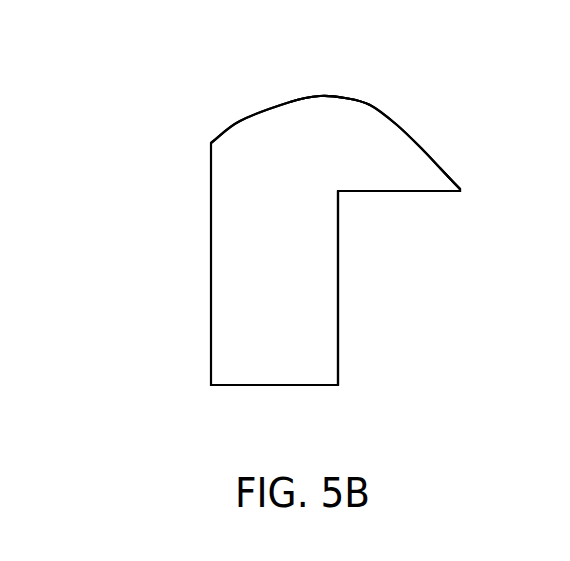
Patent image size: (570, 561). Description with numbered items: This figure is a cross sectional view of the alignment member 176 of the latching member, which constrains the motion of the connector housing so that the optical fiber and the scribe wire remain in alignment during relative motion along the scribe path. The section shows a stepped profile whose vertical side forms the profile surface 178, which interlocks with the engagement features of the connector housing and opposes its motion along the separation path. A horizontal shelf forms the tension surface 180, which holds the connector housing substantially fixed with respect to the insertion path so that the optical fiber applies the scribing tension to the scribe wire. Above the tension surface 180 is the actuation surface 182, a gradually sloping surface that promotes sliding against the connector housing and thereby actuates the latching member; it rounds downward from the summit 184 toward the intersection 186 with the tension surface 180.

The alignment member 176 is at (187, 222).
The profile surface 178 is at (338, 295).
The tension surface 180 is at (418, 192).
The actuation surface 182 is at (375, 102).
The summit 184 is at (332, 96).
The intersection 186 is at (461, 191).